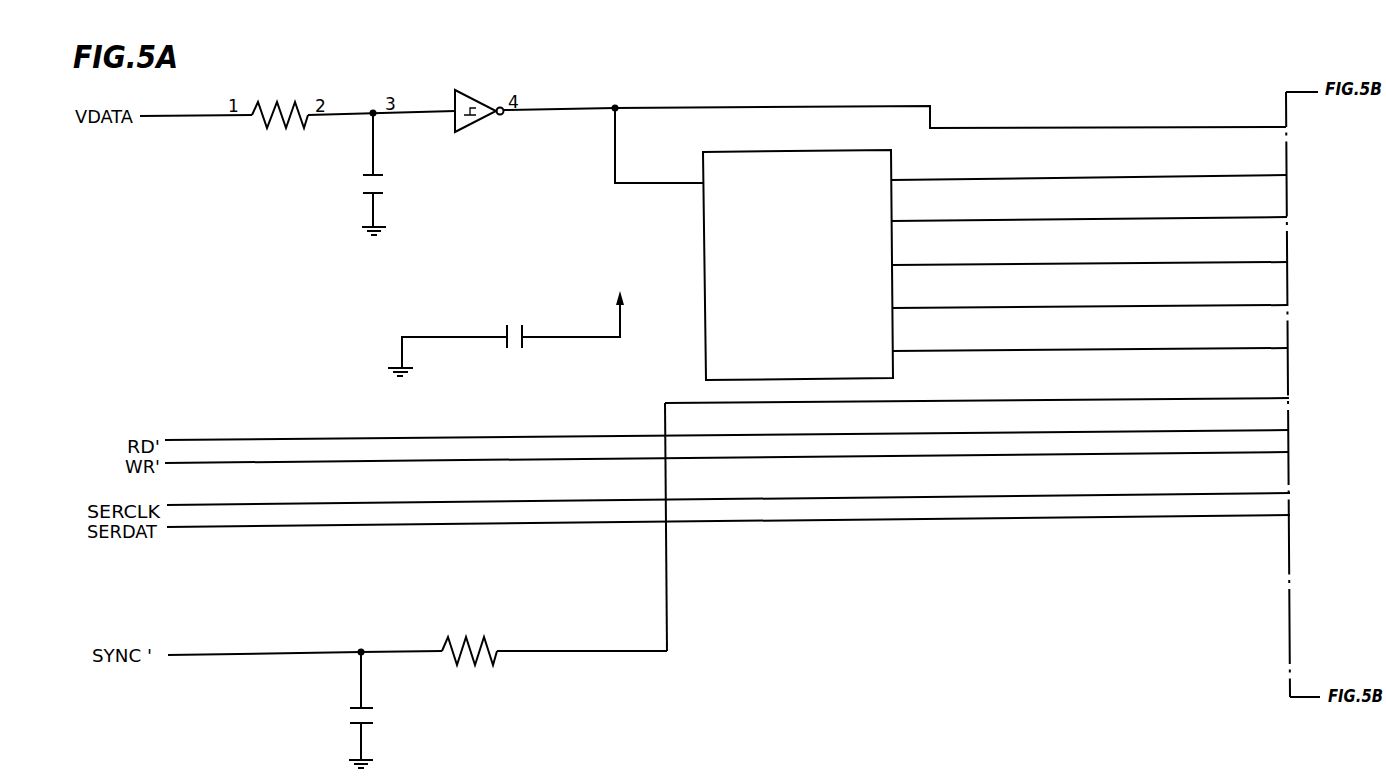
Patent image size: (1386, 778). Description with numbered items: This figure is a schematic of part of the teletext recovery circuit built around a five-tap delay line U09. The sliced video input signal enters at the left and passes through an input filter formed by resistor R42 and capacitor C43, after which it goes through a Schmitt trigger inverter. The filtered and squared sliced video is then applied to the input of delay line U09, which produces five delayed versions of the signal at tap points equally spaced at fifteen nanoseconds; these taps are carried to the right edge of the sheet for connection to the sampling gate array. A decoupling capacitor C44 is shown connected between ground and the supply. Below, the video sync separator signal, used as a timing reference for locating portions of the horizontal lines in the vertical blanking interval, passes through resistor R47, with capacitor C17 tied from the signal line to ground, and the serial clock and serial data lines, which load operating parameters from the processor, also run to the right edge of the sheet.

The filter resistor R42 is at (280, 90).
The filter capacitor C43 is at (396, 174).
The 5-tap delay line U09 is at (693, 209).
The capacitor 0.1uF C44 is at (506, 325).
The resistor 1K R47 is at (461, 625).
The capacitor 56pF C17 is at (383, 710).